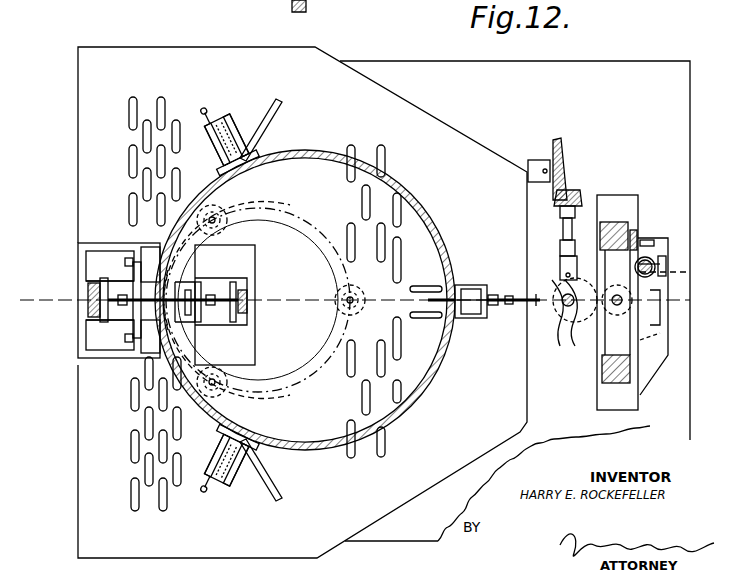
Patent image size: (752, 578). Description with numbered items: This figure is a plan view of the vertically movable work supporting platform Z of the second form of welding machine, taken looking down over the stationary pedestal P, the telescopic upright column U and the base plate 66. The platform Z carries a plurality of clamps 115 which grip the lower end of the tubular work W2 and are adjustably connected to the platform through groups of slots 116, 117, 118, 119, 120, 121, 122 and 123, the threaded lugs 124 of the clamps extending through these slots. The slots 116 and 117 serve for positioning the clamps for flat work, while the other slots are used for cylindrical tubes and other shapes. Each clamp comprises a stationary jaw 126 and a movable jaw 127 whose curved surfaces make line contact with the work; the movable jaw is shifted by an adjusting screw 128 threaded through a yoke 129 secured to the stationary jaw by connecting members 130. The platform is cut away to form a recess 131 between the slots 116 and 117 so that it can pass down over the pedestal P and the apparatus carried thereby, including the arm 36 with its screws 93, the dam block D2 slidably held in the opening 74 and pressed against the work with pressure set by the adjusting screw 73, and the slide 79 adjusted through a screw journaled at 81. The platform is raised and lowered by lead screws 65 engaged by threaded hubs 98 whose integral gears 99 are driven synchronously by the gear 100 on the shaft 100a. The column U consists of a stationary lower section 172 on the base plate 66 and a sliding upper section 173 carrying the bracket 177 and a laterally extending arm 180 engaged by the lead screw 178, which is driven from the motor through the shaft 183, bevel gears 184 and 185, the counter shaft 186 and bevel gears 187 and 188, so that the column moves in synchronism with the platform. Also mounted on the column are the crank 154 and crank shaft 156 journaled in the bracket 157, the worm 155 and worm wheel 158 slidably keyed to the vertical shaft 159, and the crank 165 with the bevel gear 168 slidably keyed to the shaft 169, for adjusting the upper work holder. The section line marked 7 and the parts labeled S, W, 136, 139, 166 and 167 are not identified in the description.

The arm 36 is at (92, 271).
The lead screw 65 is at (228, 228).
The base plate 66 is at (385, 541).
The adjusting screw 73 is at (118, 302).
The opening 74 is at (136, 285).
The slide 79 is at (88, 301).
The journal 81 is at (100, 302).
The screw 93 is at (124, 264).
The hub 98 is at (243, 196).
The gear 99 is at (262, 210).
The gear 100 is at (298, 232).
The shaft 100a is at (334, 295).
The clamp 115 is at (232, 118).
The slot 116 is at (128, 194).
The slot 117 is at (130, 500).
The slot 118 is at (283, 103).
The slot 119 is at (283, 497).
The slot 120 is at (385, 148).
The slot 121 is at (385, 455).
The slot 122 is at (335, 304).
The slot 123 is at (428, 285).
The lug 124 is at (468, 318).
The stationary jaw 126 is at (255, 172).
The movable jaw 127 is at (250, 152).
The adjusting screw 128 is at (208, 112).
The yoke 129 is at (218, 478).
The connecting member 130 is at (246, 140).
The recess 131 is at (86, 244).
The bracket 136 is at (310, 4).
The bracket 139 is at (292, 6).
The crank 154 is at (671, 307).
The worm 155 is at (662, 346).
The crank shaft 156 is at (643, 314).
The bracket 157 is at (662, 331).
The worm wheel 158 is at (662, 266).
The shaft 159 is at (662, 273).
The crank 165 is at (667, 258).
The roller 166 is at (652, 258).
The spring 167 is at (668, 274).
The bevel gear 168 is at (650, 268).
The shaft 169 is at (655, 272).
The lower section 172 is at (614, 195).
The upper section 173 is at (617, 224).
The bracket 177 is at (652, 240).
The lead screw 178 is at (575, 328).
The arm 180 is at (584, 355).
The shaft 183 is at (532, 162).
The bevel gear 184 is at (558, 140).
The bevel gear 185 is at (568, 190).
The counter shaft 186 is at (572, 234).
The bevel gear 187 is at (552, 278).
The bevel gear 188 is at (568, 330).
The section line 7 is at (347, 280).
The dam block D2 is at (130, 300).
The pedestal P is at (152, 386).
The support S is at (150, 300).
The upright column U is at (622, 410).
The wheel W is at (222, 2).
The work W2 is at (428, 228).
The platform Z is at (437, 118).